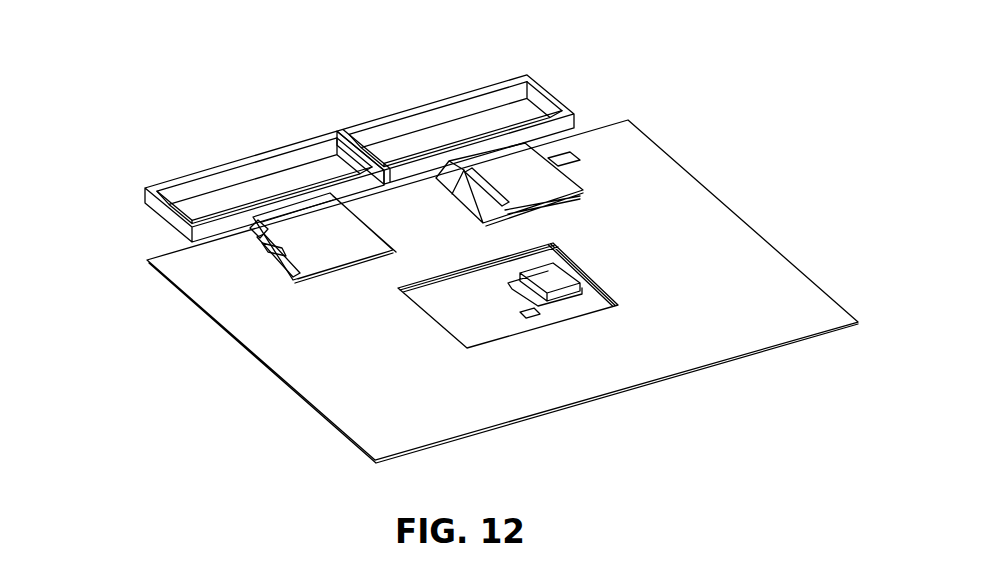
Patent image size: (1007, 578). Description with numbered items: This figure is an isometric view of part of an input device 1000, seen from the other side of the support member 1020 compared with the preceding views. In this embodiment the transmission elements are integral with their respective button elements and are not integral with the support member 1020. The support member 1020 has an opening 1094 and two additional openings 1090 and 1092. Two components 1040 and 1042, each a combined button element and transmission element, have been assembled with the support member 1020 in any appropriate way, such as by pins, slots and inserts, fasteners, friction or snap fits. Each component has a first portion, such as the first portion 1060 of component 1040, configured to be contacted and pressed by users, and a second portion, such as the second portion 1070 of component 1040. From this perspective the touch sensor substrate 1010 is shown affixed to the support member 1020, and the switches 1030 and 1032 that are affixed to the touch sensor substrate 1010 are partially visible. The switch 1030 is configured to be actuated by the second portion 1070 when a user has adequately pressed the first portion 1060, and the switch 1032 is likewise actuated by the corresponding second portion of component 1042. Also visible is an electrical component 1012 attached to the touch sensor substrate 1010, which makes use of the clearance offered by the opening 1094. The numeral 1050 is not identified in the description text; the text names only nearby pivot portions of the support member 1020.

The input device 1000 is at (148, 122).
The touch sensor substrate 1010 is at (482, 307).
The electrical component 1012 is at (548, 295).
The support member 1020 is at (367, 423).
The switch 1030 is at (333, 270).
The switch 1032 is at (560, 197).
The component 1040 is at (148, 210).
The component 1042 is at (385, 132).
The connector 1050 is at (257, 232).
The first portion 1060 is at (263, 197).
The second portion 1070 is at (323, 230).
The additional opening 1090 is at (280, 250).
The additional opening 1092 is at (560, 163).
The opening 1094 is at (527, 317).